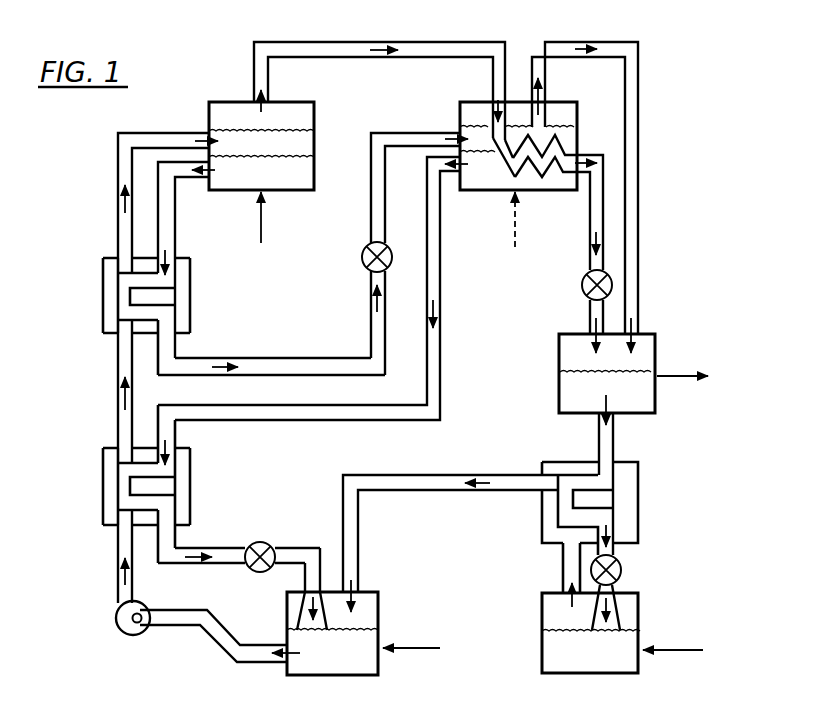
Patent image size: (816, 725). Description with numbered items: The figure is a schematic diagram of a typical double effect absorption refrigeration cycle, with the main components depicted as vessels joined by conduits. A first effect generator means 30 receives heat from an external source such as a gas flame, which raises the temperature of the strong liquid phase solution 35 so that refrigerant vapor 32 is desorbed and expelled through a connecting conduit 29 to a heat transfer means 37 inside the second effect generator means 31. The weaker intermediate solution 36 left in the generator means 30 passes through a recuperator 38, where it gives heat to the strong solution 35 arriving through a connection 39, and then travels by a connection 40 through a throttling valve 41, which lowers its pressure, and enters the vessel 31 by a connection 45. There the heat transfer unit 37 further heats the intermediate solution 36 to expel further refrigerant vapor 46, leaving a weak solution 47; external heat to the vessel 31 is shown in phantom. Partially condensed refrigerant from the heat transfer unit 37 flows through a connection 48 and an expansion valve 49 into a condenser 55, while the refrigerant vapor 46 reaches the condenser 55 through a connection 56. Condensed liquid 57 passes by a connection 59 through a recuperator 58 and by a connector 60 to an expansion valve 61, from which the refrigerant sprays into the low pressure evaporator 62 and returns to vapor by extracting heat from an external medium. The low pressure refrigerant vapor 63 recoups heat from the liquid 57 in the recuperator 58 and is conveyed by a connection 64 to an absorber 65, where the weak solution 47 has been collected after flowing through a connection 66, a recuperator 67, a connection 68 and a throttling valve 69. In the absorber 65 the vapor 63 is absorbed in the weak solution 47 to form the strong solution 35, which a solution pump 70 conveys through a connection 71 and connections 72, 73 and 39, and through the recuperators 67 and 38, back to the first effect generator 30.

The connecting conduit 29 is at (363, 42).
The first effect generator means 30 is at (315, 108).
The second effect generator means 31 is at (579, 106).
The refrigerant vapor 32 is at (222, 120).
The strong liquid phase solution 35 is at (305, 147).
The intermediate solution 36 is at (290, 180).
The heat transfer means 37 is at (548, 178).
The recuperator 38 is at (192, 295).
The connection 39 is at (118, 160).
The connection 40 is at (290, 358).
The throttling valve 41 is at (362, 257).
The connection 45 is at (408, 133).
The refrigerant vapor 46 is at (521, 110).
The weak solution 47 is at (487, 180).
The connection 48 is at (590, 247).
The expansion valve 49 is at (583, 287).
The condenser 55 is at (658, 343).
The connection 56 is at (640, 215).
The condensed liquid 57 is at (645, 403).
The recuperator 58 is at (640, 503).
The connection 59 is at (614, 437).
The connector 60 is at (620, 550).
The expansion valve 61 is at (622, 570).
The evaporator 62 is at (640, 617).
The low pressure refrigerant vapor 63 is at (367, 615).
The connection 64 is at (455, 472).
The absorber 65 is at (380, 597).
The connection 66 is at (442, 318).
The recuperator 67 is at (192, 475).
The connection 68 is at (217, 545).
The throttling valve 69 is at (270, 542).
The solution pump 70 is at (135, 636).
The connection 71 is at (228, 655).
The connection 72 is at (118, 550).
The connection 73 is at (118, 390).